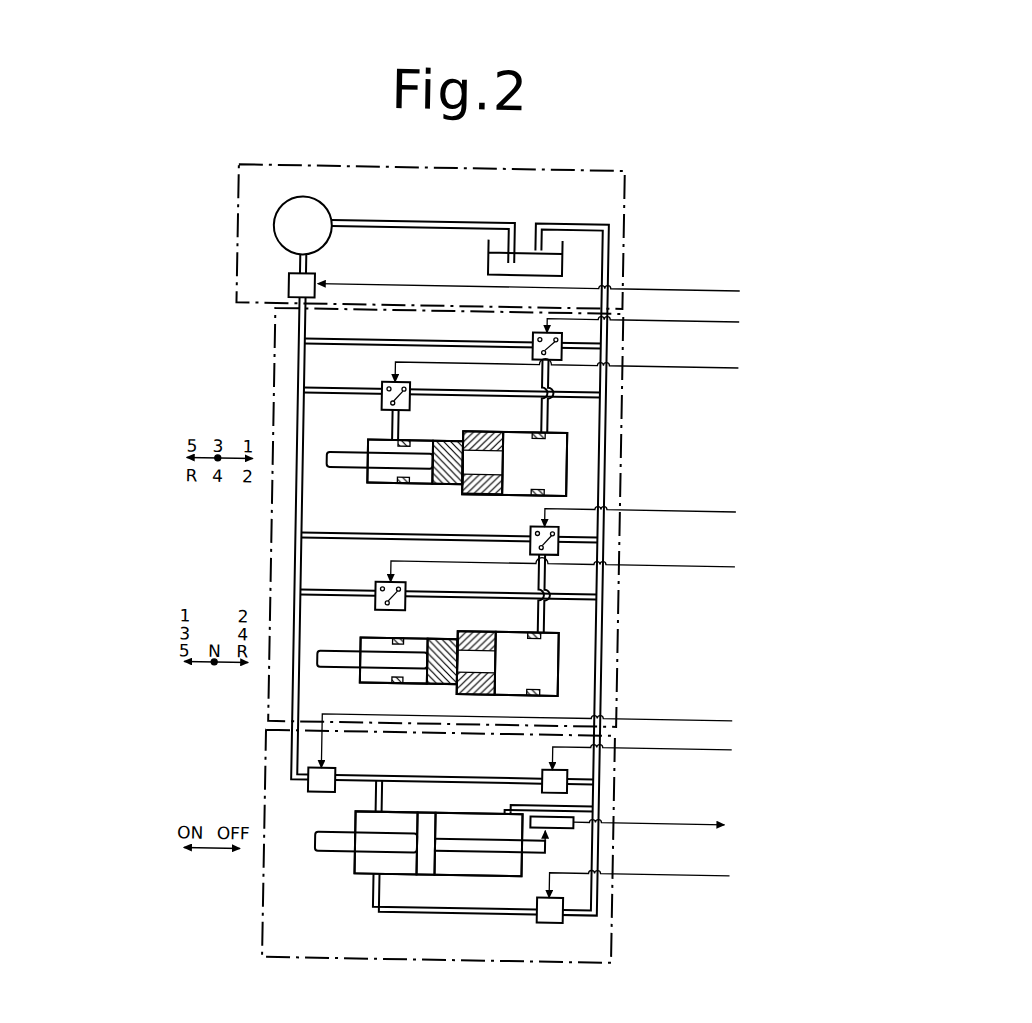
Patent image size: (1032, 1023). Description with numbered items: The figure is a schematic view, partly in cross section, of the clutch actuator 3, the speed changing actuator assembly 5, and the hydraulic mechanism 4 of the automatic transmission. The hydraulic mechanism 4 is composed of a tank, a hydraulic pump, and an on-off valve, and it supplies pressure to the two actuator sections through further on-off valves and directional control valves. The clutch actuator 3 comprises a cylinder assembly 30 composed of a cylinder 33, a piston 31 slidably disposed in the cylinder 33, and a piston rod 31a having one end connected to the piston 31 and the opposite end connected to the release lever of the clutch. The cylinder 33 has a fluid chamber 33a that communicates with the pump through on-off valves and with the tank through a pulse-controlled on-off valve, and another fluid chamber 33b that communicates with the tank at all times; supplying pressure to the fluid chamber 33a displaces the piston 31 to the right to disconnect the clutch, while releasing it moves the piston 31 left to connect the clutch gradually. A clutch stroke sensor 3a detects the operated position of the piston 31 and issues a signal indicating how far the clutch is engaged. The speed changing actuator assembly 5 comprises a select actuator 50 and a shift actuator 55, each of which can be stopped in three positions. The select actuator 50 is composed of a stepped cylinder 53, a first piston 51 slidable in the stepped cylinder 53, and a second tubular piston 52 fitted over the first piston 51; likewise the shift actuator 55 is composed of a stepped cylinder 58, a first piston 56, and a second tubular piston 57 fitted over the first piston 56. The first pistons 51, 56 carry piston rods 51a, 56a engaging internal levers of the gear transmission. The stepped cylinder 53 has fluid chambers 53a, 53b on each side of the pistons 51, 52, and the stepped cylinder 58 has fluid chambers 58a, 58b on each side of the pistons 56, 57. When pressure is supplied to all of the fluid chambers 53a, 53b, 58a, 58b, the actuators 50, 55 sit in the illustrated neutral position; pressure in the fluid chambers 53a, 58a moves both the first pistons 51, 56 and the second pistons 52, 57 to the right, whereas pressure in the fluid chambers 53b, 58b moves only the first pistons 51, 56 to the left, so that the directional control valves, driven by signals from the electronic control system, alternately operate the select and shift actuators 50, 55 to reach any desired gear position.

The clutch actuator 3 is at (272, 929).
The hydraulic mechanism 4 is at (611, 222).
The speed changing actuator assembly 5 is at (268, 347).
The cylinder assembly 30 is at (349, 877).
The piston 31 is at (431, 874).
The piston rod 31a is at (333, 847).
The cylinder 33 is at (467, 799).
The fluid chamber 33a is at (373, 882).
The fluid chamber 33b is at (513, 875).
The clutch stroke sensor 3a is at (570, 828).
The select actuator 50 is at (400, 488).
The first piston 51 is at (440, 488).
The piston rod 51a is at (343, 457).
The second tubular piston 52 is at (478, 441).
The stepped cylinder 53 is at (423, 447).
The fluid chamber 53a is at (369, 485).
The fluid chamber 53b is at (564, 463).
The shift actuator 55 is at (389, 686).
The first piston 56 is at (432, 685).
The piston rod 56a is at (342, 657).
The second tubular piston 57 is at (477, 643).
The stepped cylinder 58 is at (422, 648).
The fluid chamber 58a is at (362, 682).
The fluid chamber 58b is at (562, 662).